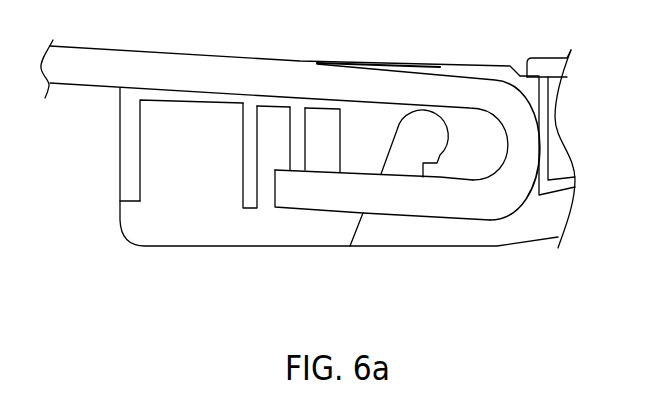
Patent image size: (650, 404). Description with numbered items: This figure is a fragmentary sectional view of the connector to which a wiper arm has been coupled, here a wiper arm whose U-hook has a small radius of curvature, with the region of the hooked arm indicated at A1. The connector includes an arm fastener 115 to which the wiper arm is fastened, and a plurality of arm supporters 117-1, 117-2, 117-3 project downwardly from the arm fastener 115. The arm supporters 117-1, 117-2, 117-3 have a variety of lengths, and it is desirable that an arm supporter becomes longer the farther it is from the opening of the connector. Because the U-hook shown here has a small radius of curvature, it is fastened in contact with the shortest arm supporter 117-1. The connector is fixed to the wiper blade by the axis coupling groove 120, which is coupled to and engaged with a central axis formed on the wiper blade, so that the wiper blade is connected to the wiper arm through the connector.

The region between cover plate and elastic member A1 is at (342, 85).
The arm fastener 115 is at (380, 100).
The arm supporter 117-1 is at (297, 153).
The arm supporter 117-2 is at (247, 200).
The arm supporter 117-3 is at (128, 192).
The axis coupling groove 120 is at (420, 137).